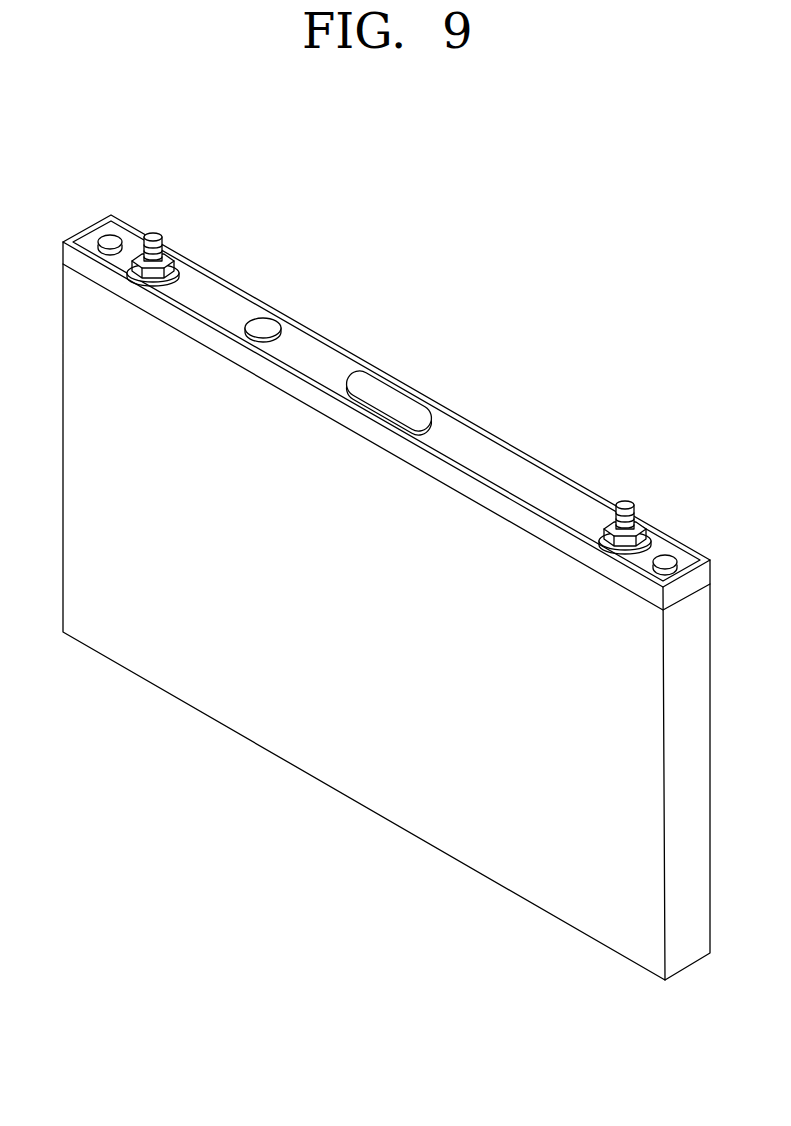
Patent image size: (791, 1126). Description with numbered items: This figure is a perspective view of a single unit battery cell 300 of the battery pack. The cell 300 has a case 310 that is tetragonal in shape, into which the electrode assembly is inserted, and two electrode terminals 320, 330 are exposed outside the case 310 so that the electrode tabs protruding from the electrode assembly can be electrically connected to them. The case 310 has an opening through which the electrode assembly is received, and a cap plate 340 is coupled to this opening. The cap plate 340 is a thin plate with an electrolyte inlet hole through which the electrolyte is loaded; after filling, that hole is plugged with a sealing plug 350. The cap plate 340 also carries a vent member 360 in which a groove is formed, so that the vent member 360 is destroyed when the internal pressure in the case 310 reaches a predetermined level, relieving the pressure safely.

The secondary battery 300 is at (587, 373).
The case 310 is at (445, 813).
The electrode terminal 320 is at (153, 233).
The electrode terminal 330 is at (626, 501).
The cap plate 340 is at (315, 362).
The sealing plug 350 is at (265, 326).
The vent member 360 is at (395, 405).